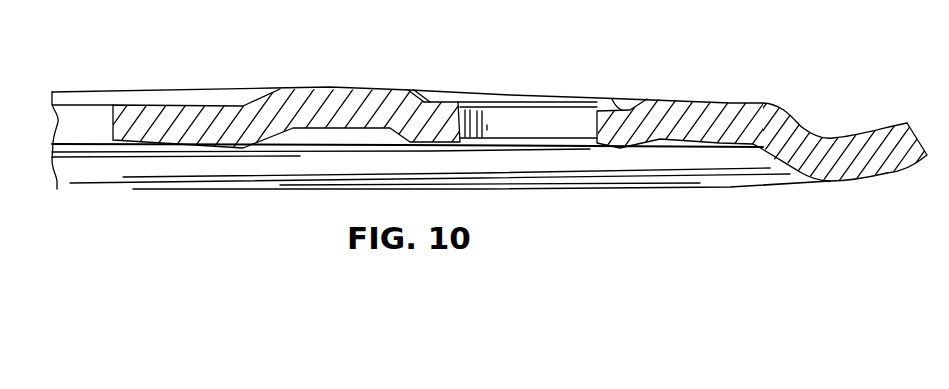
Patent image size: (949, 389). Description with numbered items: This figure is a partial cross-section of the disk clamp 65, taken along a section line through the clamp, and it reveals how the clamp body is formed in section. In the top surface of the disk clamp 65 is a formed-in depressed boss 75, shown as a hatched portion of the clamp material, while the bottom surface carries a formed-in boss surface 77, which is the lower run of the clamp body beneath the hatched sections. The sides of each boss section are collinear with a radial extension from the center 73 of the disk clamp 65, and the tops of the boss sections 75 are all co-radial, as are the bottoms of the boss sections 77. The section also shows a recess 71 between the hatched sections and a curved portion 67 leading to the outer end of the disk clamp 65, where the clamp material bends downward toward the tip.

The disk clamp 65 is at (883, 121).
The curved portion 67 is at (820, 124).
The recess 71 is at (577, 138).
The center 73 is at (114, 121).
The depressed boss 75 is at (626, 109).
The boss surface 77 is at (442, 147).